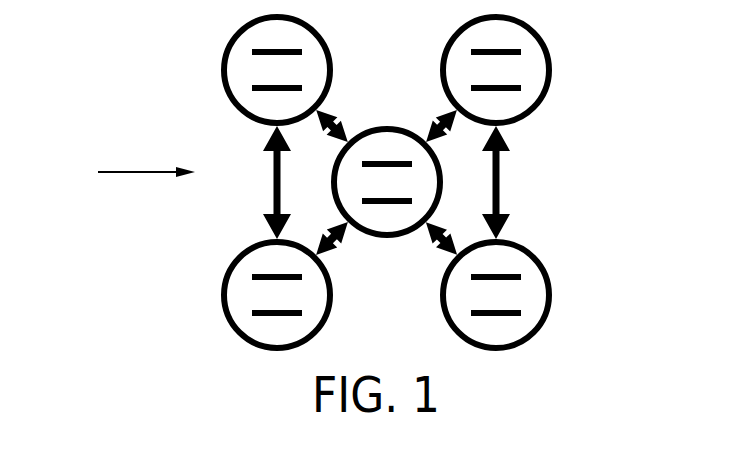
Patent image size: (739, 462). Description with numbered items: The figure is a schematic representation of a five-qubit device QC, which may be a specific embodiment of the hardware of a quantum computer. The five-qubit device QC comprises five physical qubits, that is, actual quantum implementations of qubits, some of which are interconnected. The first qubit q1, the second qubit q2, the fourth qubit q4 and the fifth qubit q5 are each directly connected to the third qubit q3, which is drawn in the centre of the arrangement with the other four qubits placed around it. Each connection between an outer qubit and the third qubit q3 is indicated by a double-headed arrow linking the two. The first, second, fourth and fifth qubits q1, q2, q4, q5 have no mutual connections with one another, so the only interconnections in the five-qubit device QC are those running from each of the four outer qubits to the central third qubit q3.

The first qubit q1 is at (224, 52).
The second qubit q2 is at (221, 305).
The third qubit q3 is at (385, 126).
The fourth qubit q4 is at (552, 308).
The fifth qubit q5 is at (551, 48).
The five-qubit device QC is at (119, 172).